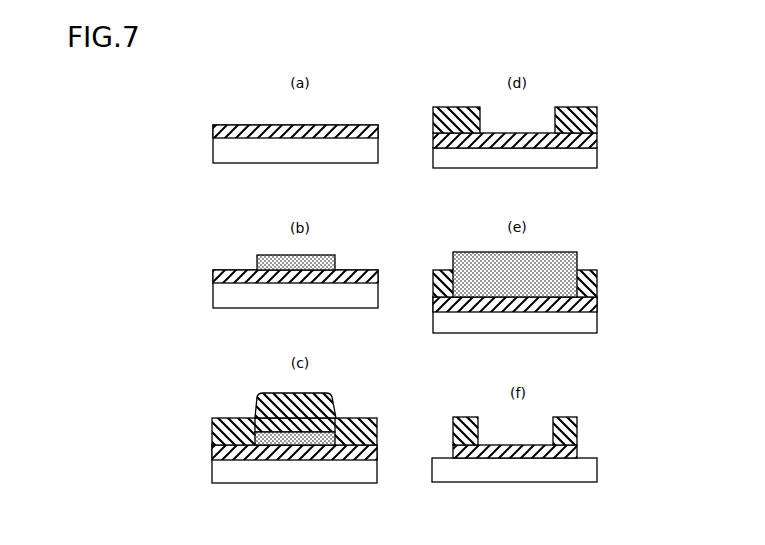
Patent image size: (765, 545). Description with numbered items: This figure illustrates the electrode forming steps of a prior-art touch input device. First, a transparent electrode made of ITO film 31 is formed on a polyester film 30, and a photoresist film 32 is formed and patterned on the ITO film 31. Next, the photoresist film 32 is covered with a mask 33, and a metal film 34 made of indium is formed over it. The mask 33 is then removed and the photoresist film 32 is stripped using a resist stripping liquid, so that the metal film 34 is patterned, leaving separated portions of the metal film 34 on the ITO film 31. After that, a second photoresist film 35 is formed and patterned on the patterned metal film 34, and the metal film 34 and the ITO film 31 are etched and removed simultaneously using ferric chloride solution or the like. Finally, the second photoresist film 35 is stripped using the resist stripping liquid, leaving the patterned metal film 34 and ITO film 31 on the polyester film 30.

The polyester film 30 is at (353, 157).
The ITO film 31 is at (353, 135).
The photoresist film 32 is at (336, 262).
The mask 33 is at (328, 412).
The metal film 34 is at (580, 110).
The second photoresist film 35 is at (552, 258).